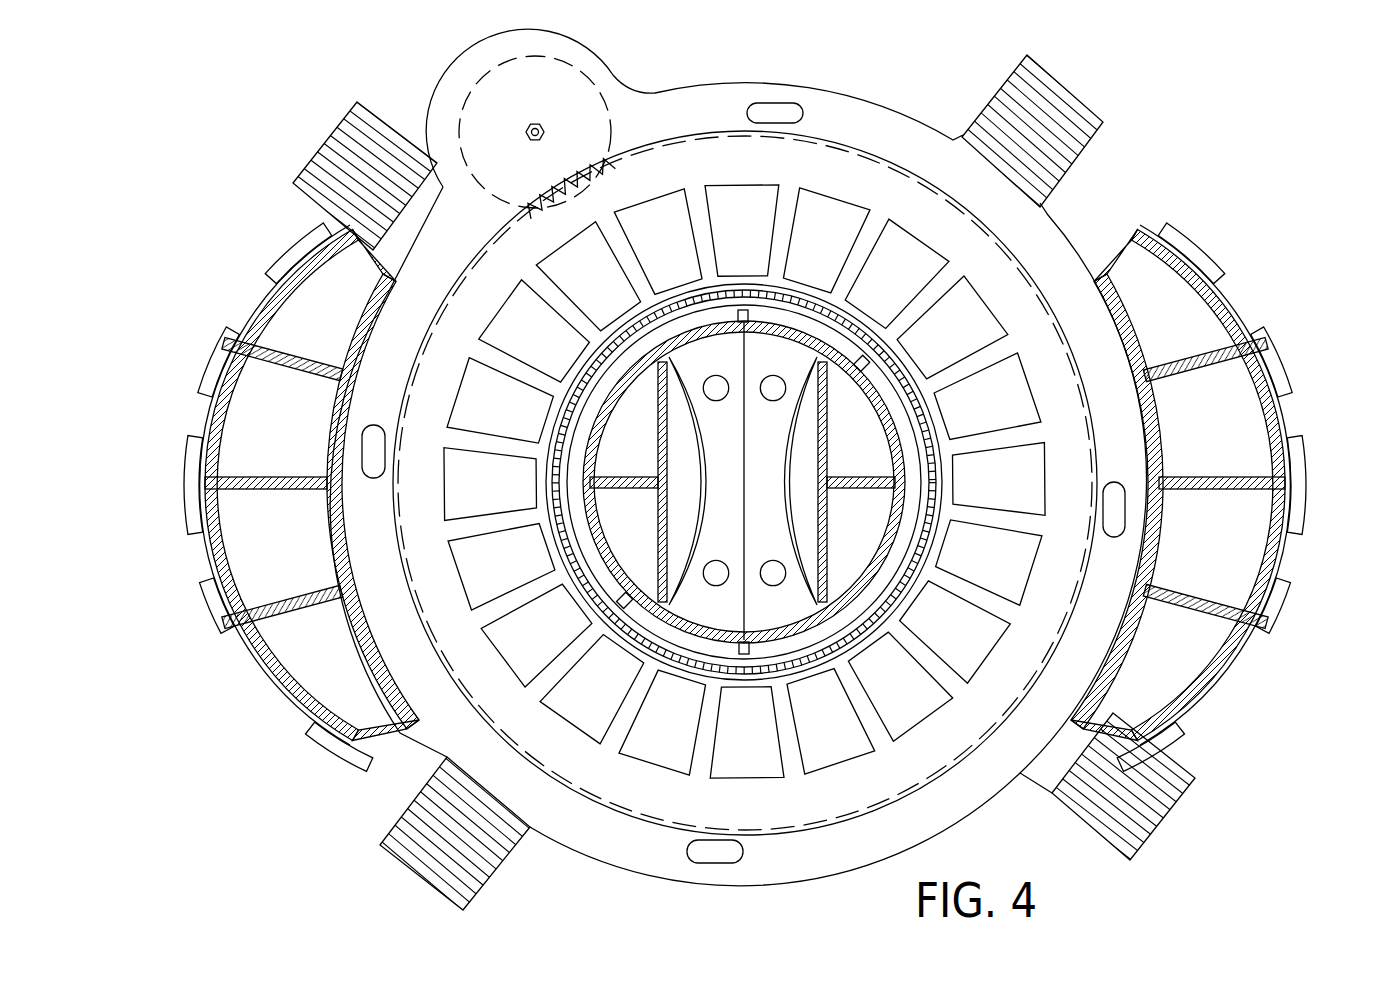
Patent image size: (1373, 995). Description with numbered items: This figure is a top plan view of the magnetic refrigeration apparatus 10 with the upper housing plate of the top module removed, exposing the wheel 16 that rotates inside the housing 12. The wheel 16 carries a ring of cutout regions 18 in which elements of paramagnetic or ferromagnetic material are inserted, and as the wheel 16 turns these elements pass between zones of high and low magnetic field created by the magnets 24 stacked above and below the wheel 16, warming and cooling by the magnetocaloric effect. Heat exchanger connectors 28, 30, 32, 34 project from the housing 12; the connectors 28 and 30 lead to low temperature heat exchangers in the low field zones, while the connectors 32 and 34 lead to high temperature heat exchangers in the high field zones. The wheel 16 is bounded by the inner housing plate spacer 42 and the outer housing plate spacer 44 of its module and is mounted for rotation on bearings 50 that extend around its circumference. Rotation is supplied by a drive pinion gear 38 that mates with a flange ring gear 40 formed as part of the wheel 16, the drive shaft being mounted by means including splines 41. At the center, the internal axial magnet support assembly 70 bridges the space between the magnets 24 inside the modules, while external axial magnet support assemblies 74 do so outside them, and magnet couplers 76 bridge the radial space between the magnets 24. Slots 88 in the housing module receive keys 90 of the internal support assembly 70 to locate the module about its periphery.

The magnetic refrigeration apparatus 10 is at (992, 820).
The housing 12 is at (697, 882).
The wheel 16 is at (1007, 240).
The cutout regions 18 is at (703, 783).
The magnets 24 is at (1203, 280).
The heat exchanger connector 28 is at (407, 817).
The heat exchanger connector 30 is at (1075, 90).
The heat exchanger connector 32 is at (317, 153).
The heat exchanger connector 34 is at (1150, 842).
The drive pinion gear 38 is at (552, 35).
The flange ring gear 40 is at (606, 165).
The splines 41 is at (532, 122).
The inner housing plate spacer 42 is at (808, 325).
The outer housing plate spacer 44 is at (707, 82).
The bearings 50 is at (850, 310).
The internal axial magnet support assembly 70 is at (826, 432).
The external axial magnet support assembly 74 is at (1235, 467).
The magnet couplers 76 is at (767, 350).
The slots 88 is at (748, 655).
The keys 90 is at (742, 638).